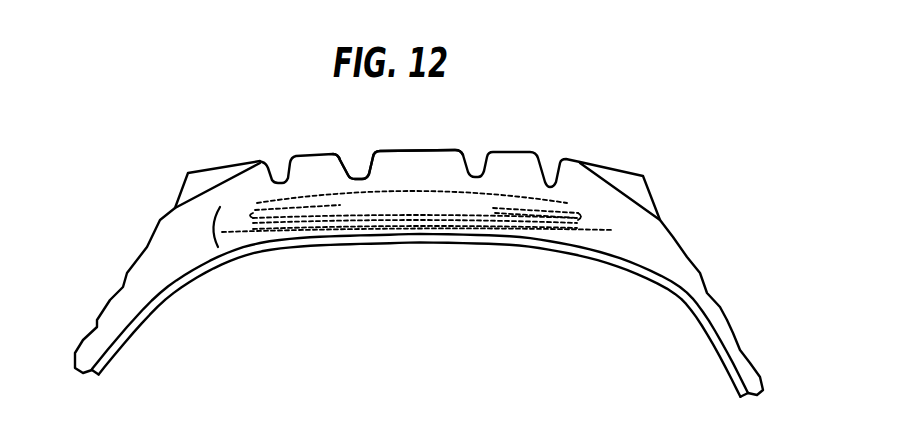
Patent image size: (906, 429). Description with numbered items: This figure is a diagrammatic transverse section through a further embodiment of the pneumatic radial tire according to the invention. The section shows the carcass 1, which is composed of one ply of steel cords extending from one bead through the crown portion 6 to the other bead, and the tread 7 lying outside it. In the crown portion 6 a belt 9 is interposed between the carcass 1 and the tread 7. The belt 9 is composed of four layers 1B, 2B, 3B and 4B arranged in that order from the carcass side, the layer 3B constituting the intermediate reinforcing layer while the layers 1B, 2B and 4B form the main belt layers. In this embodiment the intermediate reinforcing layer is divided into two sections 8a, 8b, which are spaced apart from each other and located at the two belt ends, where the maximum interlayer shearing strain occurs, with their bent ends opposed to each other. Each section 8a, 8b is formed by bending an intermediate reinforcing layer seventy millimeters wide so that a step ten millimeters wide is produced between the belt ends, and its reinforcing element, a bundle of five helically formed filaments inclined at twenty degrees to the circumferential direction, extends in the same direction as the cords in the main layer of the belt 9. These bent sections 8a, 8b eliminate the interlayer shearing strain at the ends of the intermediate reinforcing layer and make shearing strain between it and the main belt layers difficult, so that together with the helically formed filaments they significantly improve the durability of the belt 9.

The carcass 1 is at (667, 288).
The crown portion 6 is at (422, 150).
The tread 7 is at (343, 167).
The belt 9 is at (207, 228).
The belt layer 1B is at (355, 225).
The belt layer 2B is at (373, 217).
The belt layer 3B is at (497, 206).
The belt layer 4B is at (518, 198).
The bent section of intermediate reinforcing layer 8a is at (262, 218).
The bent section of intermediate reinforcing layer 8b is at (535, 215).